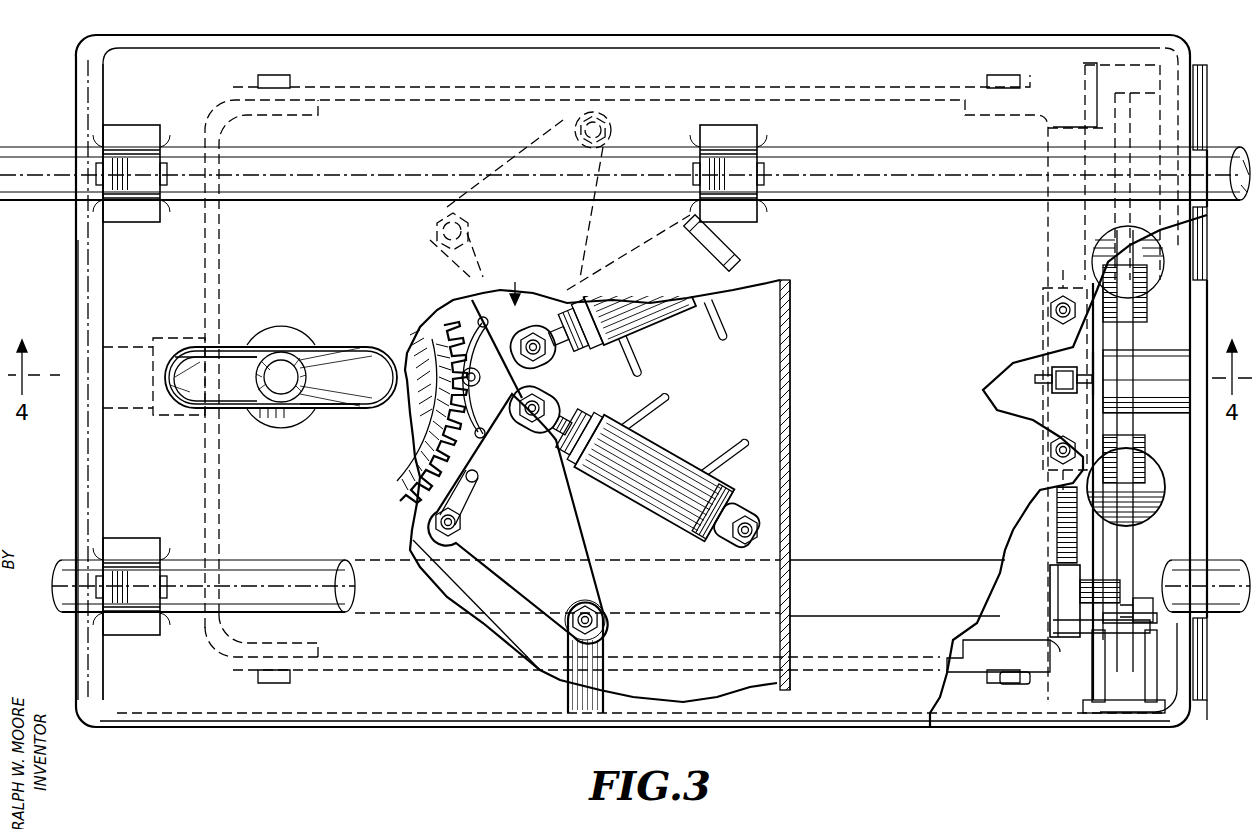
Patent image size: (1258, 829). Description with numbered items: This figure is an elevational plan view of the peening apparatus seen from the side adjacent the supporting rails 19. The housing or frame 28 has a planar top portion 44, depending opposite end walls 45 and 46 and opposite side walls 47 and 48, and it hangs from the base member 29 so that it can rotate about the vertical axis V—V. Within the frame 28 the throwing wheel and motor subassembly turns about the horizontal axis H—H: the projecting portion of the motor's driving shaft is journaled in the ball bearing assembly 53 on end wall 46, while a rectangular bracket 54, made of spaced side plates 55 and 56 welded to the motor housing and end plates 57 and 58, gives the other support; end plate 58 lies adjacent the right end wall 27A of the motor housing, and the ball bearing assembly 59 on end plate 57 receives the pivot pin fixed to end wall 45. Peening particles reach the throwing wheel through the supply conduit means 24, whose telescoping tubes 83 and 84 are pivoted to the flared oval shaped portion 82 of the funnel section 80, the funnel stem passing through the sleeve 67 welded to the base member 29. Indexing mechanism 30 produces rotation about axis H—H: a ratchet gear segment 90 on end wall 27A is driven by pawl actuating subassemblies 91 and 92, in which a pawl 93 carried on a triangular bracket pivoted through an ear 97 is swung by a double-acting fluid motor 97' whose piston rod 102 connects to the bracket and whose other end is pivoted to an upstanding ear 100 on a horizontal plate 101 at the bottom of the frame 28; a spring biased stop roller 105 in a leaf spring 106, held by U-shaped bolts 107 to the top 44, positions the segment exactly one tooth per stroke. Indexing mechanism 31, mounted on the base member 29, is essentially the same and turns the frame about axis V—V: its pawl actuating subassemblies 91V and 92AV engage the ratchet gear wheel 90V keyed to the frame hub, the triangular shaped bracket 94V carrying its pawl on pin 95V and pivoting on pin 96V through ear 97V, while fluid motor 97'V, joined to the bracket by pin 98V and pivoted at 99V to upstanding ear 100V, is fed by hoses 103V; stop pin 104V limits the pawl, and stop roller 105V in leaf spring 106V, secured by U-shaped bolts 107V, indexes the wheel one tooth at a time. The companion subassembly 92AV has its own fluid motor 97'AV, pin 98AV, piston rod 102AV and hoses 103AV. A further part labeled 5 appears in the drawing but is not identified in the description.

The lever arm 5 is at (512, 560).
The rails 19 is at (28, 147).
The peening particle supply conduit means 24 is at (281, 363).
The right end wall of motor housing 27A is at (1093, 352).
The frame 28 is at (70, 504).
The base member 29 is at (798, 474).
The indexing mechanism 30 is at (1207, 270).
The indexing mechanism 31 is at (673, 481).
The planar top portion 44 is at (218, 382).
The end wall 45 is at (78, 446).
The end wall 46 is at (1207, 696).
The side wall 47 is at (572, 34).
The side wall 48 is at (1150, 727).
The ball bearing assembly 53 is at (1162, 360).
The rectangular bracket 54 is at (400, 82).
The side plate 55 is at (520, 670).
The side plate 56 is at (522, 86).
The end plate 57 is at (205, 486).
The end plate 58 is at (1066, 662).
The ball bearing assembly 59 is at (170, 334).
The sleeve 67 is at (282, 418).
The funnel section 80 is at (236, 348).
The flared oval shaped portion 82 is at (347, 408).
The tube 83 is at (298, 400).
The tube 84 is at (282, 360).
The ratchet gear segment 90 is at (1057, 530).
The ratchet gear wheel 90V is at (413, 432).
The pawl actuating subassembly 91 is at (1130, 436).
The pawl actuating subassembly 91V is at (500, 600).
The pawl actuating subassembly 92 is at (1140, 305).
The pawl actuating subassembly 92AV is at (585, 212).
The pawl 93 is at (1122, 590).
The triangular shaped bracket 94V is at (517, 472).
The pin 95V is at (462, 522).
The pin 96V is at (598, 612).
The ear 97 is at (1079, 601).
The fluid motor 97' is at (1126, 495).
The ear 97V is at (603, 646).
The fluid motor 97'V is at (654, 478).
The fluid motor 97'AV is at (603, 324).
The pin 98V is at (548, 404).
The pin 98AV is at (540, 362).
The pivotal connection 99V is at (740, 548).
The upstanding ear 100 is at (762, 505).
The upstanding ear 100V is at (770, 520).
The horizontal plate 101 is at (1190, 468).
The piston rod 102 is at (590, 422).
The piston rod 102AV is at (582, 342).
The fluid supply hoses 103V is at (648, 390).
The fluid supply hoses 103AV is at (660, 360).
The stop pin 104V is at (478, 478).
The stop roller 105 is at (1052, 385).
The stop roller 105V is at (425, 330).
The leaf spring 106 is at (1093, 380).
The leaf spring 106V is at (478, 440).
The U-shaped bolts 107 is at (1050, 310).
The U-shaped bolts 107V is at (480, 377).